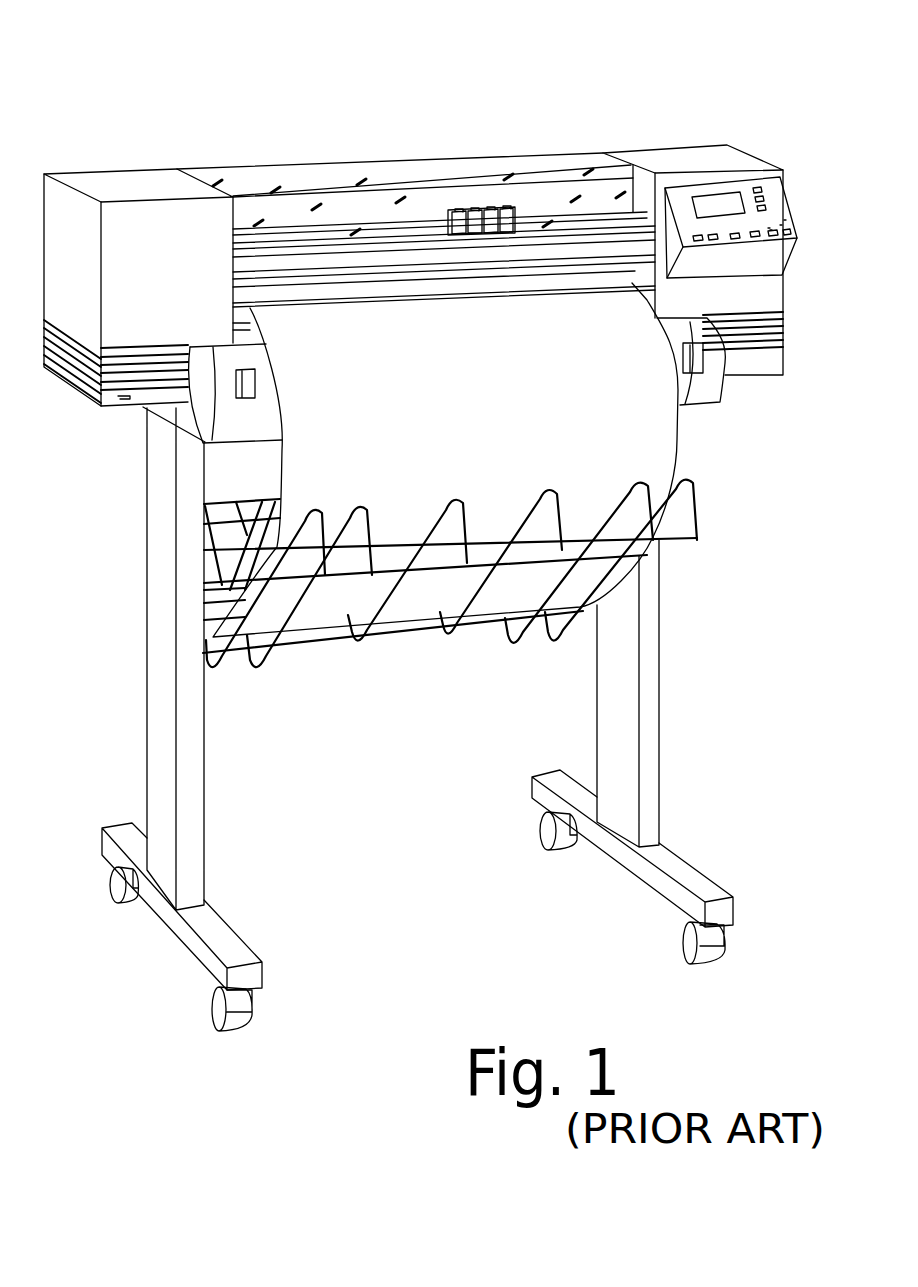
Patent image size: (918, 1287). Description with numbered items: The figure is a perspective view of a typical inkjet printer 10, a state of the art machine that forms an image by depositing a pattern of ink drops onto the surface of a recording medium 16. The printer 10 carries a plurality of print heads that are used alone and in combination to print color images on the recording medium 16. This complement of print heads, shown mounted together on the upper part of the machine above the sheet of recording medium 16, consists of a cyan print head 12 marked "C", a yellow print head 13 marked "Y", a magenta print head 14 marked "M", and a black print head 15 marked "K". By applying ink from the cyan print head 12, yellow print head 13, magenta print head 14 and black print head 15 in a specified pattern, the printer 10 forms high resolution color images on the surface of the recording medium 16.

The inkjet printer 10 is at (448, 521).
The cyan print head 12 is at (472, 149).
The yellow print head 13 is at (467, 213).
The magenta print head 14 is at (480, 210).
The black print head 15 is at (512, 212).
The recording medium 16 is at (607, 322).